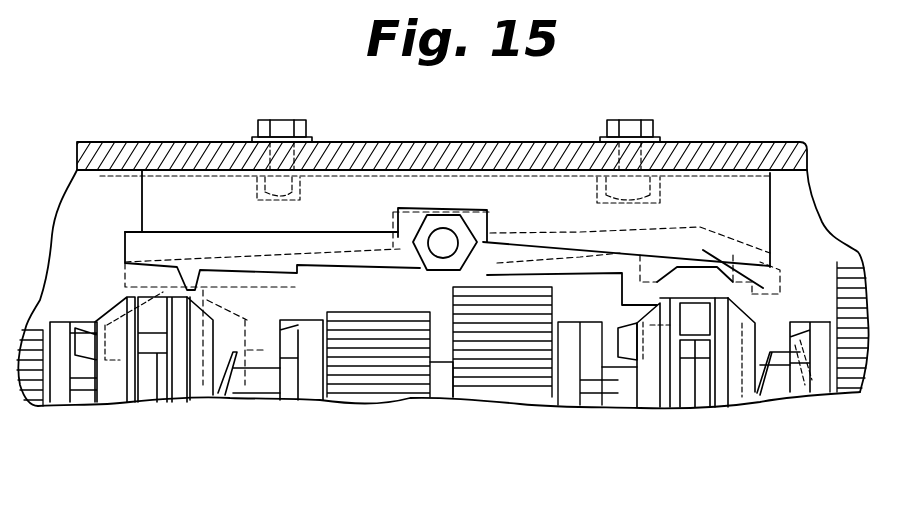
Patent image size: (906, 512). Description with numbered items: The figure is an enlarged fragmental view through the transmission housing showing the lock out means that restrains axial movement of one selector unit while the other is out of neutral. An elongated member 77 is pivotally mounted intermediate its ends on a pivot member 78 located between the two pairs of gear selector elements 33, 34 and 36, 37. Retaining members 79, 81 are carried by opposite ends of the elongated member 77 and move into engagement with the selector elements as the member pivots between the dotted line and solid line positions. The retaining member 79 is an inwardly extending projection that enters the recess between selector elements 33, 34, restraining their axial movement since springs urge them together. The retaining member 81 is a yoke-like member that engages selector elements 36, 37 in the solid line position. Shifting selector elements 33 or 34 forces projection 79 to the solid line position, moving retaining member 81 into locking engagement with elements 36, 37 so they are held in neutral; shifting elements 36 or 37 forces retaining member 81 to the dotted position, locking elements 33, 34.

The gear selector element 33 is at (104, 314).
The gear selector element 34 is at (211, 387).
The gear selector element 36 is at (645, 407).
The gear selector element 37 is at (722, 403).
The elongated member 77 is at (291, 233).
The pivot member 78 is at (455, 243).
The retaining member 79 is at (197, 282).
The retaining member 81 is at (778, 273).